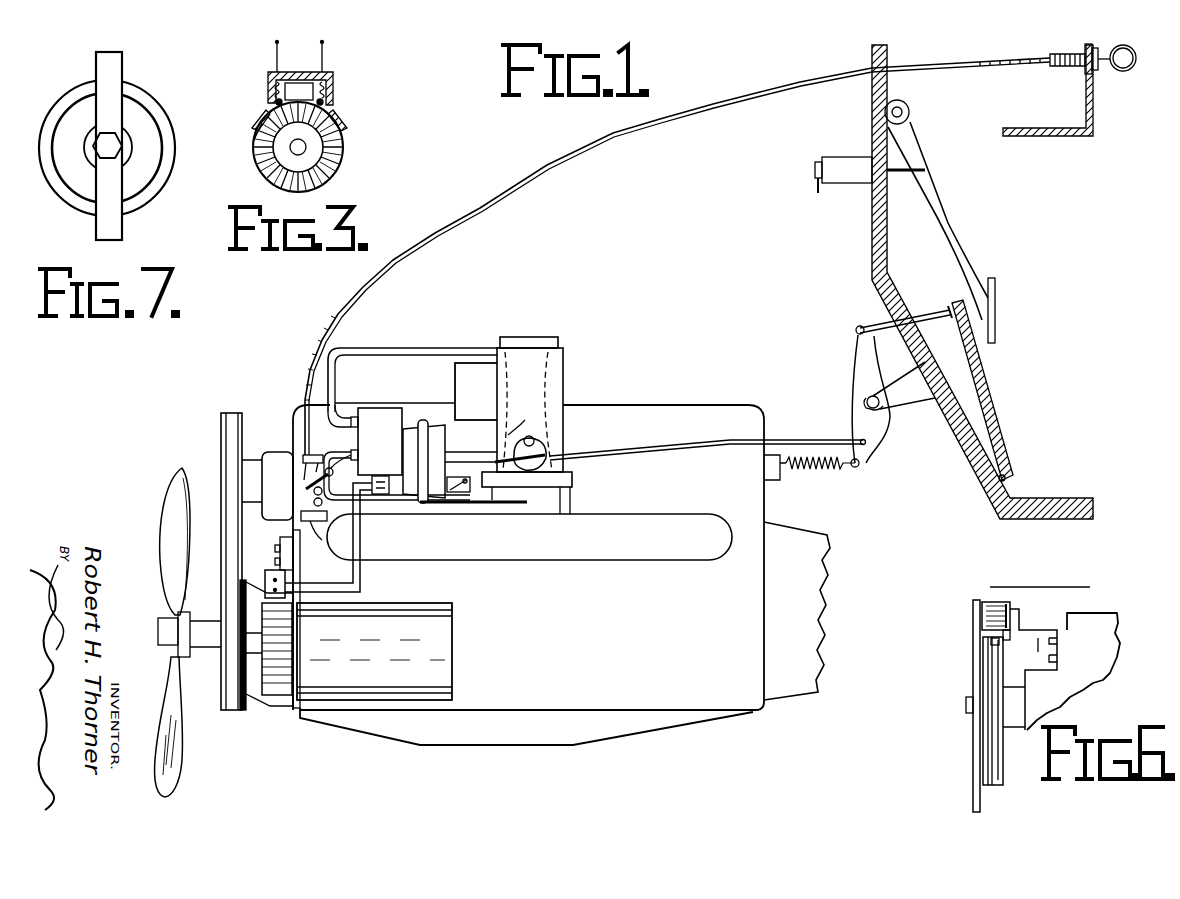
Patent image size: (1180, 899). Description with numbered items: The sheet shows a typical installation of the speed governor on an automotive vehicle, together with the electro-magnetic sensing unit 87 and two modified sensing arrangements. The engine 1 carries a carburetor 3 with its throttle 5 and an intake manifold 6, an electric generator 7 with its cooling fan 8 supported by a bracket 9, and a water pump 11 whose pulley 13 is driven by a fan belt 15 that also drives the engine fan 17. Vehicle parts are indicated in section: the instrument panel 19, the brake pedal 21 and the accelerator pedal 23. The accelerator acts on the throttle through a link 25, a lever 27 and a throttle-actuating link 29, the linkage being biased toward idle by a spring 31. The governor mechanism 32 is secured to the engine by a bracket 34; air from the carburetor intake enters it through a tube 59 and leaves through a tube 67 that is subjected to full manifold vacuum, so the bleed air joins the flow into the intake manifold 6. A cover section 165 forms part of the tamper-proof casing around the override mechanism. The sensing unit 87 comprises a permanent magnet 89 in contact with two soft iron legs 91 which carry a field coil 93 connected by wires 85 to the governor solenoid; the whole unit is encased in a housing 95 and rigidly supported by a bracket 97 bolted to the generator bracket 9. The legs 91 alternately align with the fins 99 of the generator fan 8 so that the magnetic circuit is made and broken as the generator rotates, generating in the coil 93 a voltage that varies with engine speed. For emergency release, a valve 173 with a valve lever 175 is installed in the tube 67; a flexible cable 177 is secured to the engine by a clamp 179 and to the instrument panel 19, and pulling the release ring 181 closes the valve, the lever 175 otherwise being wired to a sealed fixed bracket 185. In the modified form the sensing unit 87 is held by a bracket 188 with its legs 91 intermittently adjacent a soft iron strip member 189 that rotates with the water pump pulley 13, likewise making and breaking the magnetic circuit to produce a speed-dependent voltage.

In FIG. 1, the engine 1 is at (656, 402).
In FIG. 1, the carburetor 3 is at (566, 380).
In FIG. 1, the throttle 5 is at (512, 435).
In FIG. 1, the intake manifold 6 is at (570, 499).
In FIG. 1, the electric generator 7 is at (390, 663).
In FIG. 3, the cooling fan 8 is at (338, 162).
In FIG. 1, the cooling fan 8 is at (280, 694).
In FIG. 1, the bracket 9 is at (362, 588).
In FIG. 1, the water pump 11 is at (262, 505).
In FIG. 7, the pulley 13 is at (58, 200).
In FIG. 1, the pulley 13 is at (246, 428).
In FIG. 6, the pulley 13 is at (1003, 745).
In FIG. 1, the fan belt 15 is at (240, 572).
In FIG. 1, the engine fan 17 is at (192, 454).
In FIG. 1, the instrument panel 19 is at (1093, 130).
In FIG. 1, the brake pedal 21 is at (997, 290).
In FIG. 1, the accelerator pedal 23 is at (1000, 395).
In FIG. 1, the link 25 is at (870, 324).
In FIG. 1, the lever 27 is at (858, 362).
In FIG. 1, the throttle-actuating link 29 is at (830, 440).
In FIG. 1, the spring 31 is at (824, 468).
In FIG. 1, the governor mechanism 32 is at (462, 430).
In FIG. 1, the bracket 34 is at (486, 504).
In FIG. 1, the tube 59 is at (412, 356).
In FIG. 1, the tube 67 is at (378, 494).
In FIG. 1, the wires 85 is at (353, 574).
In FIG. 6, the wires 85 is at (1038, 638).
In FIG. 3, the sensing unit 87 is at (353, 80).
In FIG. 1, the sensing unit 87 is at (254, 581).
In FIG. 6, the sensing unit 87 is at (986, 596).
In FIG. 3, the permanent magnet 89 is at (310, 78).
In FIG. 6, the permanent magnet 89 is at (983, 616).
In FIG. 3, the soft iron legs 91 is at (333, 80).
In FIG. 6, the soft iron legs 91 is at (983, 606).
In FIG. 3, the field coil 93 is at (268, 100).
In FIG. 6, the field coil 93 is at (994, 600).
In FIG. 3, the housing 95 is at (345, 125).
In FIG. 1, the bracket 97 is at (280, 540).
In FIG. 3, the fins 99 is at (255, 142).
In FIG. 1, the cover section 165 is at (553, 460).
In FIG. 1, the valve 173 is at (352, 458).
In FIG. 1, the valve lever 175 is at (310, 485).
In FIG. 1, the flexible cable 177 is at (552, 172).
In FIG. 1, the clamp 179 is at (313, 455).
In FIG. 1, the release ring 181 is at (1130, 71).
In FIG. 1, the fixed bracket 185 is at (322, 540).
In FIG. 6, the bracket 188 is at (1055, 615).
In FIG. 7, the soft iron strip member 189 is at (97, 70).
In FIG. 6, the soft iron strip member 189 is at (973, 742).